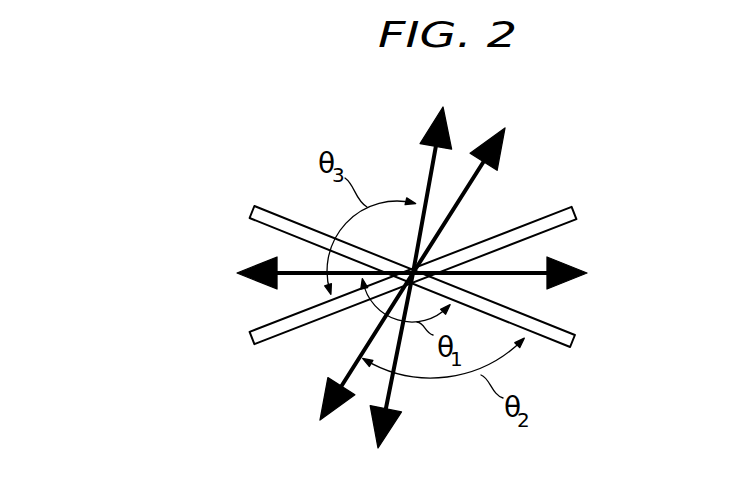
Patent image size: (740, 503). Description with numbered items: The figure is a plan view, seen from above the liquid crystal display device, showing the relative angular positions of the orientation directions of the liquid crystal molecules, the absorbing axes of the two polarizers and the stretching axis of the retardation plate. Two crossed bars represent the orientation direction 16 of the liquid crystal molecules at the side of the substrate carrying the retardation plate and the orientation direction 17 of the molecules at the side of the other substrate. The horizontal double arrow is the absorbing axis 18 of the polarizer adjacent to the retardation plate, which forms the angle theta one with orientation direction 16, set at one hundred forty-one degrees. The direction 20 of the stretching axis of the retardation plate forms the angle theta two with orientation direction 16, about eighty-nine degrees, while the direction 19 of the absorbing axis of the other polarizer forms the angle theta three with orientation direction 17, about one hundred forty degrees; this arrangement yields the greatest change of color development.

The orientation direction of liquid crystal molecules 16 is at (577, 342).
The orientation direction of liquid crystal molecules 17 is at (577, 214).
The absorbing axis 18 is at (588, 275).
The direction of absorbing axis 19 is at (396, 426).
The direction of stretching axis 20 is at (503, 148).